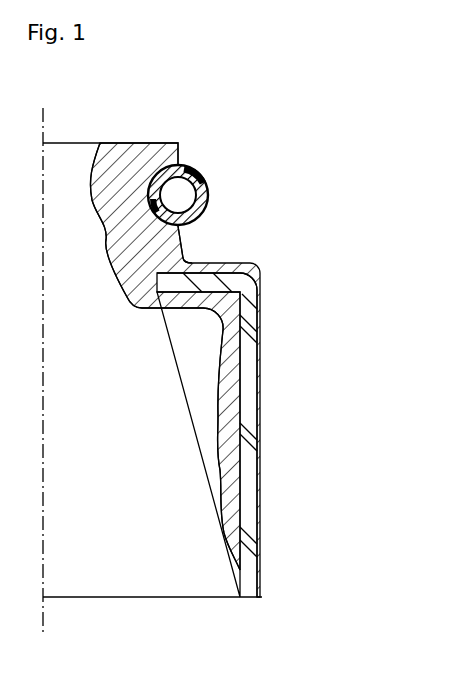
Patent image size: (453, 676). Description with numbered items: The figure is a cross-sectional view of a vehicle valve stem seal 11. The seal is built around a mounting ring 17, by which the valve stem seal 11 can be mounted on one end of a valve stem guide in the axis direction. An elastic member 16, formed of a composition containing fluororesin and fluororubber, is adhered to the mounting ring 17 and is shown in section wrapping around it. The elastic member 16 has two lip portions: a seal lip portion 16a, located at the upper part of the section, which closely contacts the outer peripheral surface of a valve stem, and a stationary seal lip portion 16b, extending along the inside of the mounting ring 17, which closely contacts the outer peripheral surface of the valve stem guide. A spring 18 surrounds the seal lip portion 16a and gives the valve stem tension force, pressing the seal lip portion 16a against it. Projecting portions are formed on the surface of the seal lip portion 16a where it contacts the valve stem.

The vehicle valve stem seal 11 is at (343, 156).
The elastic member 16 is at (255, 268).
The seal lip portion 16a is at (120, 172).
The stationary seal lip portion 16b is at (228, 456).
The mounting ring 17 is at (248, 372).
The spring 18 is at (207, 192).